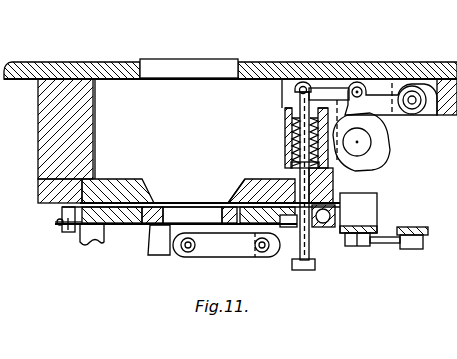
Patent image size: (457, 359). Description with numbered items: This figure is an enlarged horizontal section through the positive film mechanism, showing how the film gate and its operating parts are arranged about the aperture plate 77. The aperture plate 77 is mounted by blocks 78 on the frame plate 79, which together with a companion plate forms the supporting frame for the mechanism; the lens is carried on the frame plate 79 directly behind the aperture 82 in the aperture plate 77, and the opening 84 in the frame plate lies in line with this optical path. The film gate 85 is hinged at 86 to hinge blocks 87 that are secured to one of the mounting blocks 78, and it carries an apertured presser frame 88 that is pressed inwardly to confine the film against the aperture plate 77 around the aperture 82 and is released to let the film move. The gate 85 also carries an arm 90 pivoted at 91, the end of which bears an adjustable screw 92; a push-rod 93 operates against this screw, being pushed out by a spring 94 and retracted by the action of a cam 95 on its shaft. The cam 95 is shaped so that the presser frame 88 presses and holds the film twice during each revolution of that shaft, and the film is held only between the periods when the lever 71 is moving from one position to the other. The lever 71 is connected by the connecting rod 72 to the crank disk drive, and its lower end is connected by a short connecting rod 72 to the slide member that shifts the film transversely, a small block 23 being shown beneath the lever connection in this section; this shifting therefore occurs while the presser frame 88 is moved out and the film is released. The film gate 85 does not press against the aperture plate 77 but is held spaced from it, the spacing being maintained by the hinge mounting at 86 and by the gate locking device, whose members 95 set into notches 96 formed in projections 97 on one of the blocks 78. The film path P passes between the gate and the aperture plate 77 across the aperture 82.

The frame plate 79 is at (28, 74).
The window opening in plate 84 is at (184, 82).
The blocks 78 is at (78, 133).
The aperture plate 77 is at (122, 193).
The groove P is at (172, 203).
The aperture 82 is at (211, 192).
The projections 97 is at (62, 210).
The notches 96 is at (53, 223).
The cam 95 is at (67, 229).
The film gate 85 is at (122, 226).
The presser frame 88 is at (151, 226).
The arm 90 is at (220, 244).
The pivot 91 is at (263, 256).
The push-rod 93 is at (285, 156).
The spring 94 is at (285, 138).
The hinge blocks 87 is at (312, 202).
The adjustable screw 92 is at (315, 266).
The hinge 86 is at (336, 213).
The block 23 is at (358, 247).
The connecting rod 72 is at (390, 243).
The lever 71 is at (420, 228).